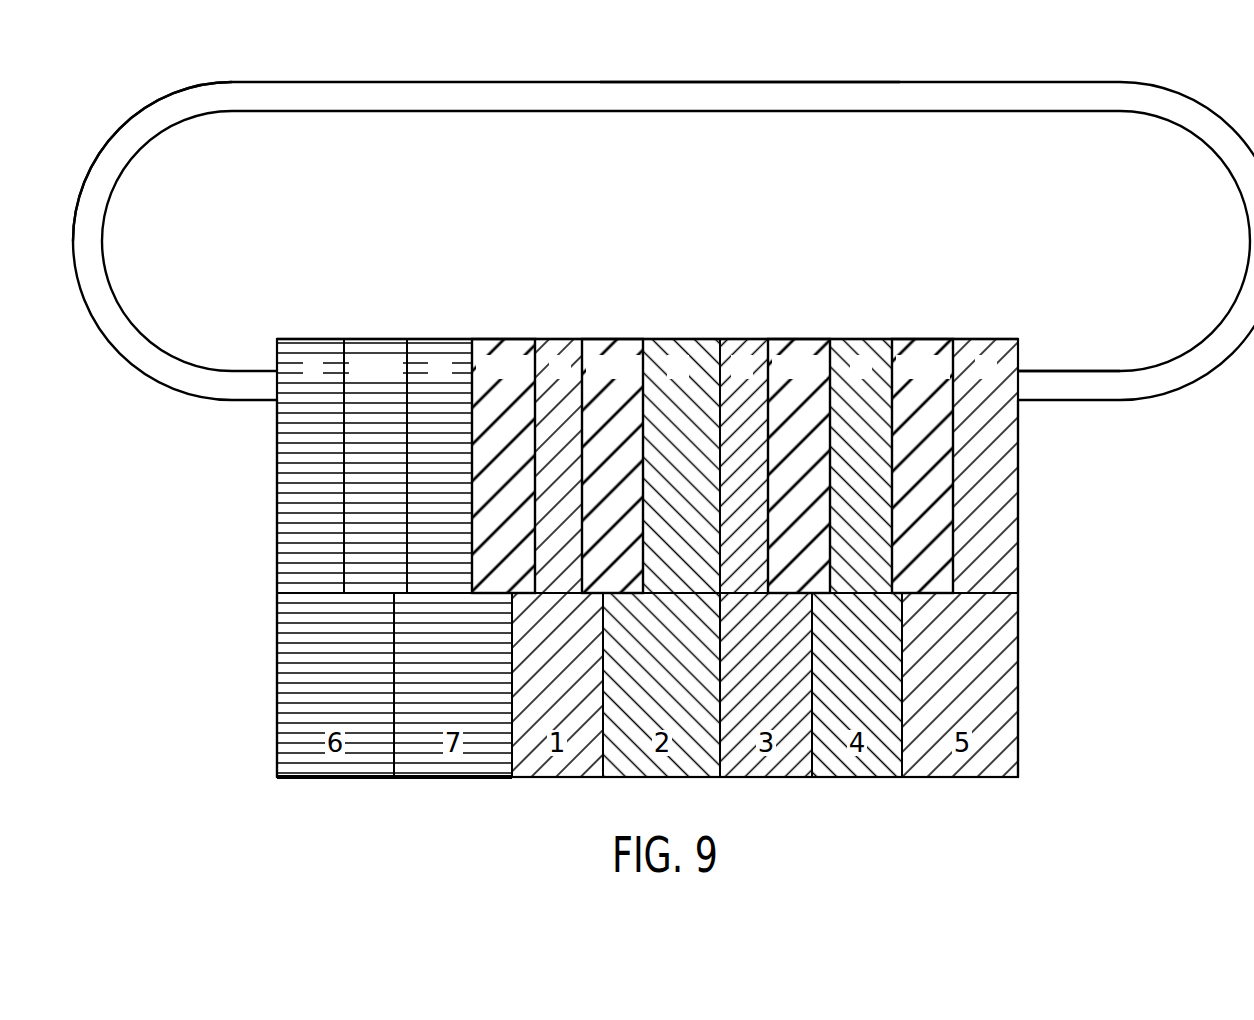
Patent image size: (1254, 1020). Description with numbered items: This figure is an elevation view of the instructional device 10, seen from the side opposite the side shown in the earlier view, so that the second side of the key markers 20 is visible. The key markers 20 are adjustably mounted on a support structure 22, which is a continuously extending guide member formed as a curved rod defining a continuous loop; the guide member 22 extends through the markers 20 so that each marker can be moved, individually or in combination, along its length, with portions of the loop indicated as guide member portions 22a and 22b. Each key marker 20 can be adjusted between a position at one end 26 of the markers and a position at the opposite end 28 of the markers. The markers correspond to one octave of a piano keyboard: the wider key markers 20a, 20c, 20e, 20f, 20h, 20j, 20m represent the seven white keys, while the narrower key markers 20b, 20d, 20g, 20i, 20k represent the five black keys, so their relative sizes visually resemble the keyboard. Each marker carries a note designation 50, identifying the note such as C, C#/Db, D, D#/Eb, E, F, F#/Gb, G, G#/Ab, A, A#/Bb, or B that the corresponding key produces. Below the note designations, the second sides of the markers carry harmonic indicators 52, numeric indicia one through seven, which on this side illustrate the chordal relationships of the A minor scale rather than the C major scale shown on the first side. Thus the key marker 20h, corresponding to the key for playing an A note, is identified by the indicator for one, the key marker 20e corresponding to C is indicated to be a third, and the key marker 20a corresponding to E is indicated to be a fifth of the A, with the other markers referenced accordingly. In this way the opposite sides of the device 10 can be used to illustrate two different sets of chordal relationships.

The instructional device 10 is at (82, 116).
The key markers 20 is at (1066, 268).
The key marker 20a is at (980, 350).
The key marker 20b is at (920, 350).
The key marker 20c is at (860, 350).
The key marker 20d is at (800, 350).
The key marker 20e is at (742, 350).
The key marker 20f is at (682, 350).
The key marker 20g is at (622, 350).
The key marker 20h is at (563, 350).
The key marker 20i is at (504, 350).
The key marker 20j is at (444, 350).
The key marker 20k is at (383, 350).
The key marker 20m is at (313, 350).
The support structure 22 is at (114, 291).
The guide member portion 22a is at (1068, 371).
The guide member portion 22b is at (710, 82).
The one end of the markers 26 is at (1052, 566).
The opposite end of the markers 28 is at (226, 559).
The note designations 50 is at (300, 352).
The harmonic indicators 52 is at (337, 764).